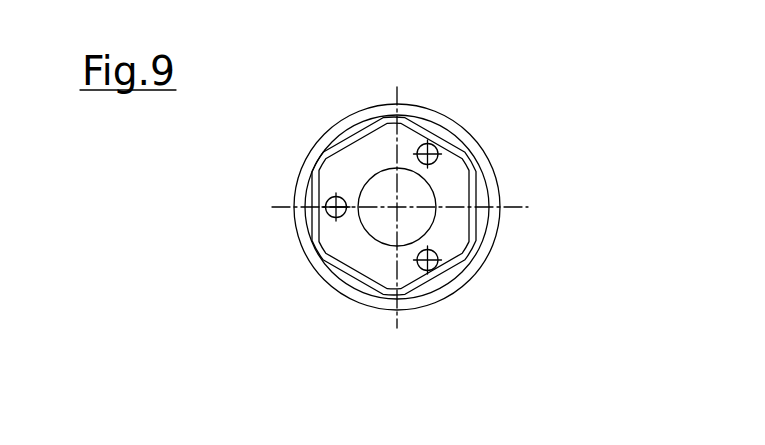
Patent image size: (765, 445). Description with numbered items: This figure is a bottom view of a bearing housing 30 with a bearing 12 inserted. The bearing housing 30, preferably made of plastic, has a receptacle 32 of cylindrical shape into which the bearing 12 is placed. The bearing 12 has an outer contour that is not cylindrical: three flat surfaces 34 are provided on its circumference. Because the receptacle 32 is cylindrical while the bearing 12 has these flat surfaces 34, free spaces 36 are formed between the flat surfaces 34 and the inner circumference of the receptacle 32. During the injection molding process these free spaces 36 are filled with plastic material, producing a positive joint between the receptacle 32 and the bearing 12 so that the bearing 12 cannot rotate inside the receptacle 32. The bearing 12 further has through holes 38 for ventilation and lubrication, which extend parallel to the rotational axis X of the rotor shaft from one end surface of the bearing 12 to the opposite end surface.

The bearing 12 is at (451, 257).
The bearing housing 30 is at (483, 151).
The receptacle 32 is at (484, 247).
The flat surfaces 34 is at (360, 133).
The free spaces 36 is at (375, 138).
The through holes 38 is at (437, 151).
The rotational axis X is at (398, 322).